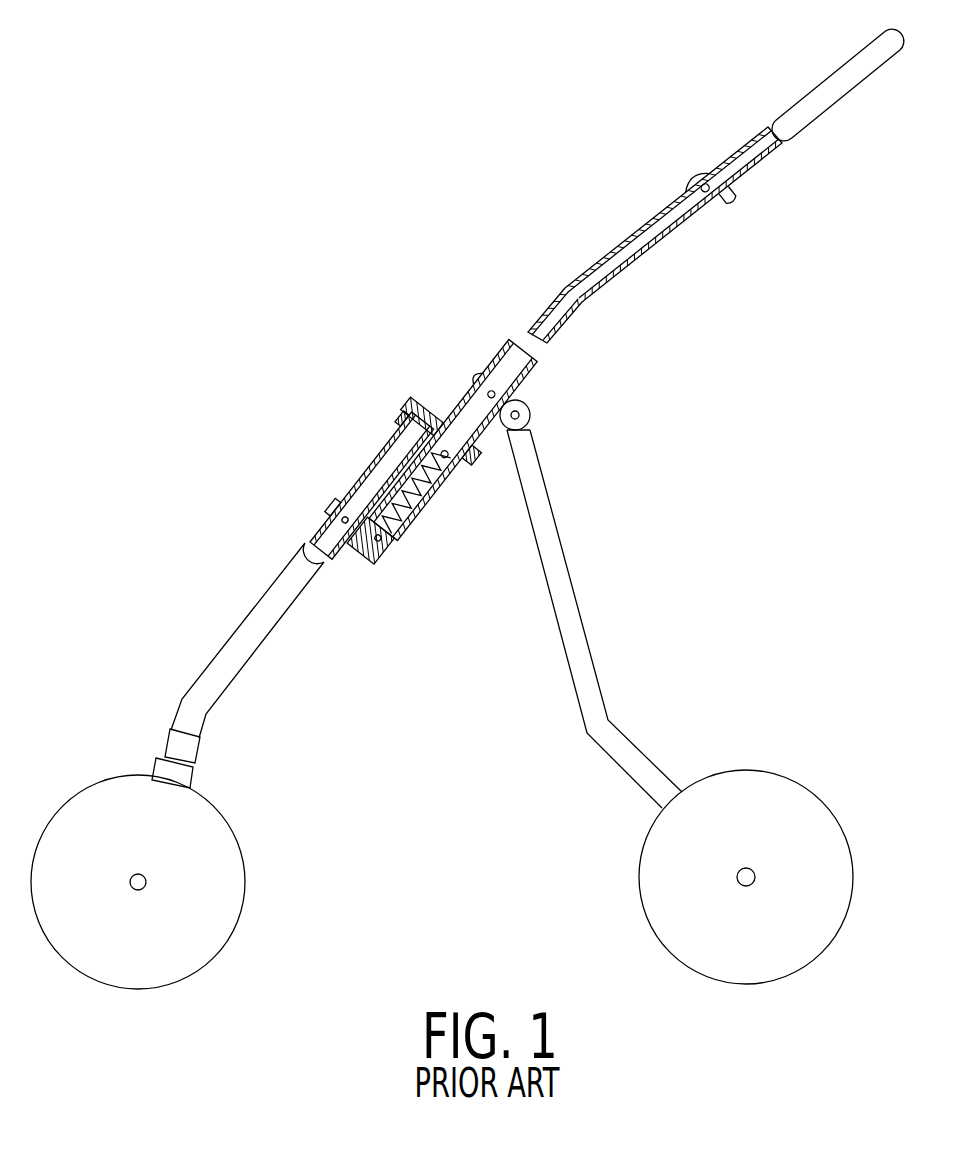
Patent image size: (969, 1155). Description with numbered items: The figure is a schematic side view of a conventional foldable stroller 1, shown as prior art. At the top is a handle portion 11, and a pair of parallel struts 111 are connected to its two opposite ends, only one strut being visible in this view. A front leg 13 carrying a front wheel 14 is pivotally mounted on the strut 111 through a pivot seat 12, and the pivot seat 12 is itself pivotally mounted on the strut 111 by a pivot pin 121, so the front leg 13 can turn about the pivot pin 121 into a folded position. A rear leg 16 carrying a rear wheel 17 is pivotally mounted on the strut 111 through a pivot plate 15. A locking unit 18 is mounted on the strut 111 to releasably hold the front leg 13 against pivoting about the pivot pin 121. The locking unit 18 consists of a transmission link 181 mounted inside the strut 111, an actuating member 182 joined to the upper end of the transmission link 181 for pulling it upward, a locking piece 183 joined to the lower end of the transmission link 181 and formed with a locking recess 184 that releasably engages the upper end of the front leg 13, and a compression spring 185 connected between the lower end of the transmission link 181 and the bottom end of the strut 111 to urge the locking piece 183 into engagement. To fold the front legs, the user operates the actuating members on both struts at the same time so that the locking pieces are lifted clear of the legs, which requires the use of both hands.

The foldable stroller 1 is at (578, 518).
The handle portion 11 is at (852, 90).
The strut 111 is at (587, 300).
The pivot seat 12 is at (332, 505).
The pivot pin 121 is at (357, 560).
The front leg 13 is at (243, 648).
The front wheel 14 is at (221, 887).
The pivot plate 15 is at (522, 397).
The rear leg 16 is at (588, 685).
The rear wheel 17 is at (672, 888).
The locking unit 18 is at (514, 398).
The transmission link 181 is at (623, 247).
The actuating member 182 is at (730, 200).
The locking piece 183 is at (428, 410).
The locking recess 184 is at (407, 422).
The compression spring 185 is at (407, 517).